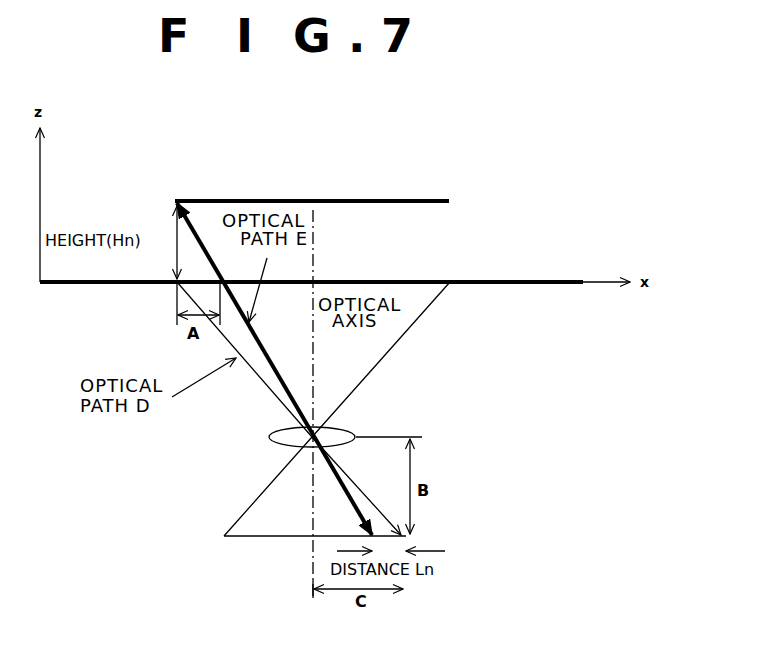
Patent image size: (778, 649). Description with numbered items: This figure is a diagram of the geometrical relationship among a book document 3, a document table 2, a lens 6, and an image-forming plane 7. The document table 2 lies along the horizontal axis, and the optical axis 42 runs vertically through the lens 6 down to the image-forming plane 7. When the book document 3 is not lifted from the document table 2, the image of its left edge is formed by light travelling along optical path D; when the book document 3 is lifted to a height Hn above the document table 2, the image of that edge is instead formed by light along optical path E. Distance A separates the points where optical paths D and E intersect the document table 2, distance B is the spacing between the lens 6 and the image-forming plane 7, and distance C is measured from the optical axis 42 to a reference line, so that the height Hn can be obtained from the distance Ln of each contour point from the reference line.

The document table 2 is at (488, 282).
The book document 3 is at (347, 200).
The lens 6 is at (269, 437).
The image-forming plane 7 is at (254, 537).
The optical axis 42 is at (308, 419).